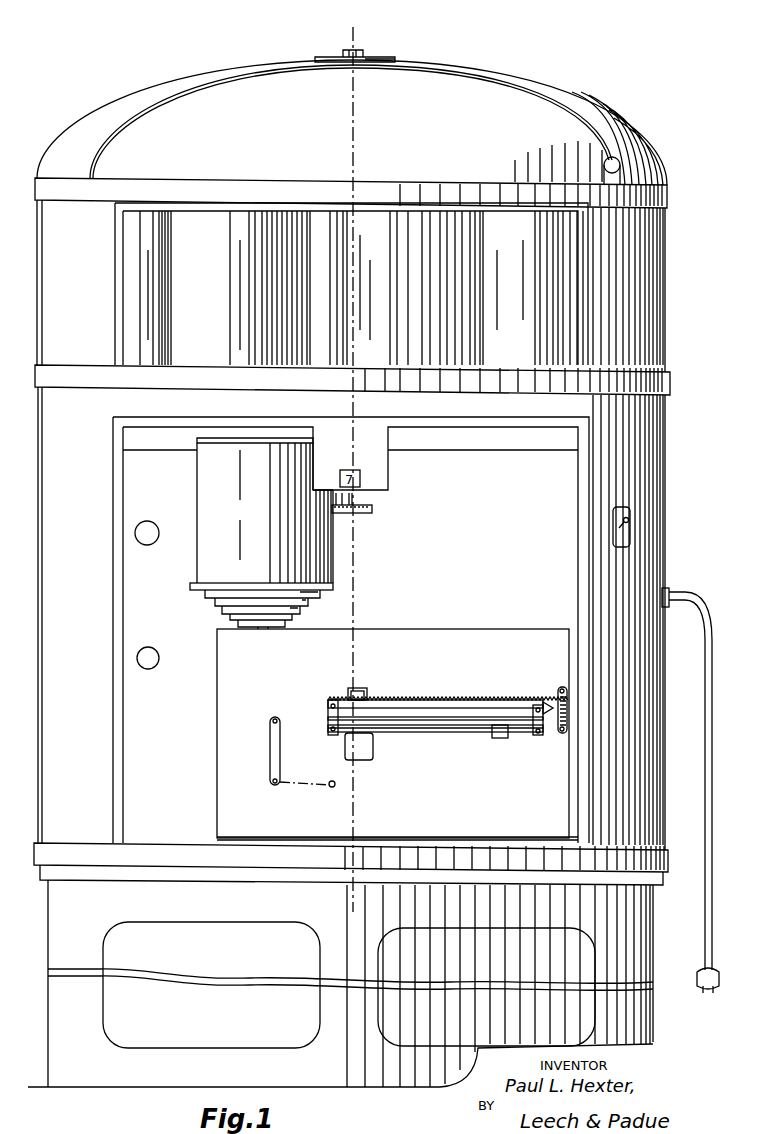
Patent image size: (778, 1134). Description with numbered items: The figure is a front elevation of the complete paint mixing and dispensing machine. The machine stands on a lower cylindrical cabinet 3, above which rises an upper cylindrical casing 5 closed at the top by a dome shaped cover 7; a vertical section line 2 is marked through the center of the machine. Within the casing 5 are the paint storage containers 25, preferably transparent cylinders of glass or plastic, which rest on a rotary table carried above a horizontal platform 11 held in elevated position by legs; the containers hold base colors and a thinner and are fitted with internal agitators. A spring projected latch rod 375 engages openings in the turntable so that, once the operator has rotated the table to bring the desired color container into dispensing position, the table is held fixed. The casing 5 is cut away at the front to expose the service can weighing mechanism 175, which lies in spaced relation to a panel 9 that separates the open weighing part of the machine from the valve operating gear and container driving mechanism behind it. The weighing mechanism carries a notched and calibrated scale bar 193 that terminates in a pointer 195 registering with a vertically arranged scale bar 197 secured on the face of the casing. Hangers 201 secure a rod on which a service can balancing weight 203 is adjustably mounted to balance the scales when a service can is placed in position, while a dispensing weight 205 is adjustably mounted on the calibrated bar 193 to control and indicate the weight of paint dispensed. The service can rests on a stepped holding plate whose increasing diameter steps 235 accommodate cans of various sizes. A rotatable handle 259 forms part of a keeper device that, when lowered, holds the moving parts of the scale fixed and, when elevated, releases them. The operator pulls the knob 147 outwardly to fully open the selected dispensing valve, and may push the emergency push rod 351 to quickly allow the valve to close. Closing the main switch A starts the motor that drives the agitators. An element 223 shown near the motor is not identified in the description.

The section line 2- 2 is at (330, 912).
The dome shaped cover 7 is at (569, 90).
The paint storage containers 25 is at (361, 288).
The upper cylindrical casing 5 is at (655, 461).
The main switch A is at (625, 536).
The push rod 351 is at (178, 502).
The spring projected latch rod 375 is at (373, 513).
The motor 223 is at (333, 588).
The increasing diameter steps 235 is at (226, 606).
The service can weighing mechanism 175 is at (536, 616).
The knob 147 is at (155, 667).
The pointer 195 is at (545, 705).
The notched and calibrated scale bar 193 is at (480, 710).
The hangers 201 is at (338, 735).
The dispensing weight 205 is at (365, 748).
The service can balancing weight 203 is at (490, 740).
The vertically arranged scale bar 197 is at (566, 731).
The rotatable handle 259 is at (275, 792).
The panel 9 is at (150, 775).
The horizontal platform 11 is at (710, 770).
The lower cylindrical cabinet 3 is at (645, 940).